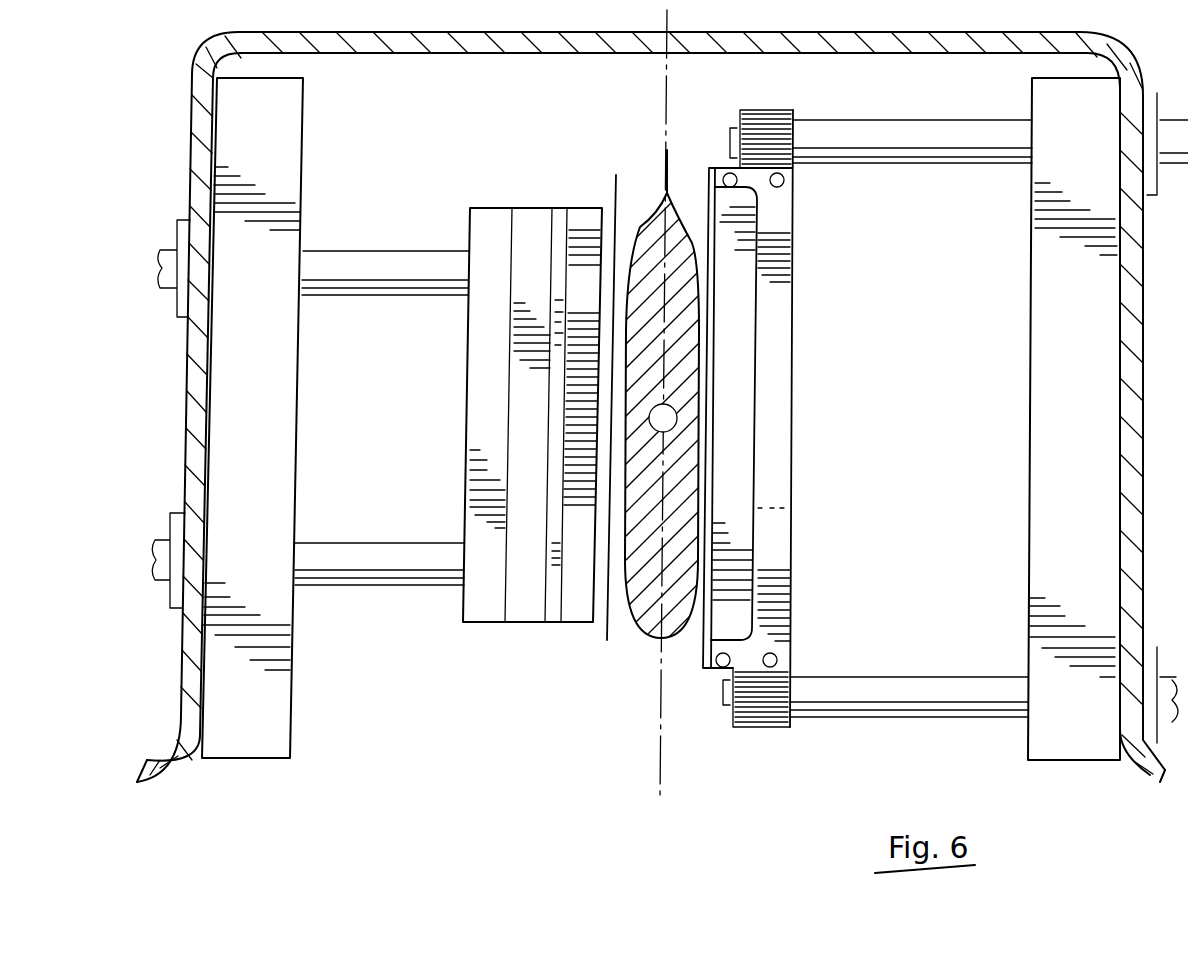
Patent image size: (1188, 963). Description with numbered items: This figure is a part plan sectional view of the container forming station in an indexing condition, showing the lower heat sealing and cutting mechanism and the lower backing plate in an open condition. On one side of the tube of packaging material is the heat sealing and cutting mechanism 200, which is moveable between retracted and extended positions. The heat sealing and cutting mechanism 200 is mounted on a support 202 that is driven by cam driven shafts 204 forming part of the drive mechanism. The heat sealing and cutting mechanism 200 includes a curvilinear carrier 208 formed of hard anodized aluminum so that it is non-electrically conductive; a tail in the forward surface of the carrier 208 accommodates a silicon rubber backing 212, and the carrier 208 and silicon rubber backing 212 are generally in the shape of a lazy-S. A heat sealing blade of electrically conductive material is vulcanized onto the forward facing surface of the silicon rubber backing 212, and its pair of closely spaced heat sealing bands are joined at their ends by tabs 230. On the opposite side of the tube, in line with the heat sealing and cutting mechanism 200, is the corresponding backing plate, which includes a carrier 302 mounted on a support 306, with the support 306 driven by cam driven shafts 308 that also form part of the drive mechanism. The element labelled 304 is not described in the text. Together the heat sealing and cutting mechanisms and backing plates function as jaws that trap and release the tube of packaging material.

The heat sealing and cutting mechanism 200 is at (533, 391).
The support 202 is at (522, 608).
The cam driven shafts 204 is at (368, 256).
The curvilinear carrier 208 is at (577, 610).
The silicon rubber backing 212 is at (613, 215).
The tabs 230 is at (607, 640).
The carrier 302 is at (742, 365).
The slide bar 304 is at (717, 307).
The support 306 is at (778, 437).
The cam driven shafts 308 is at (900, 140).